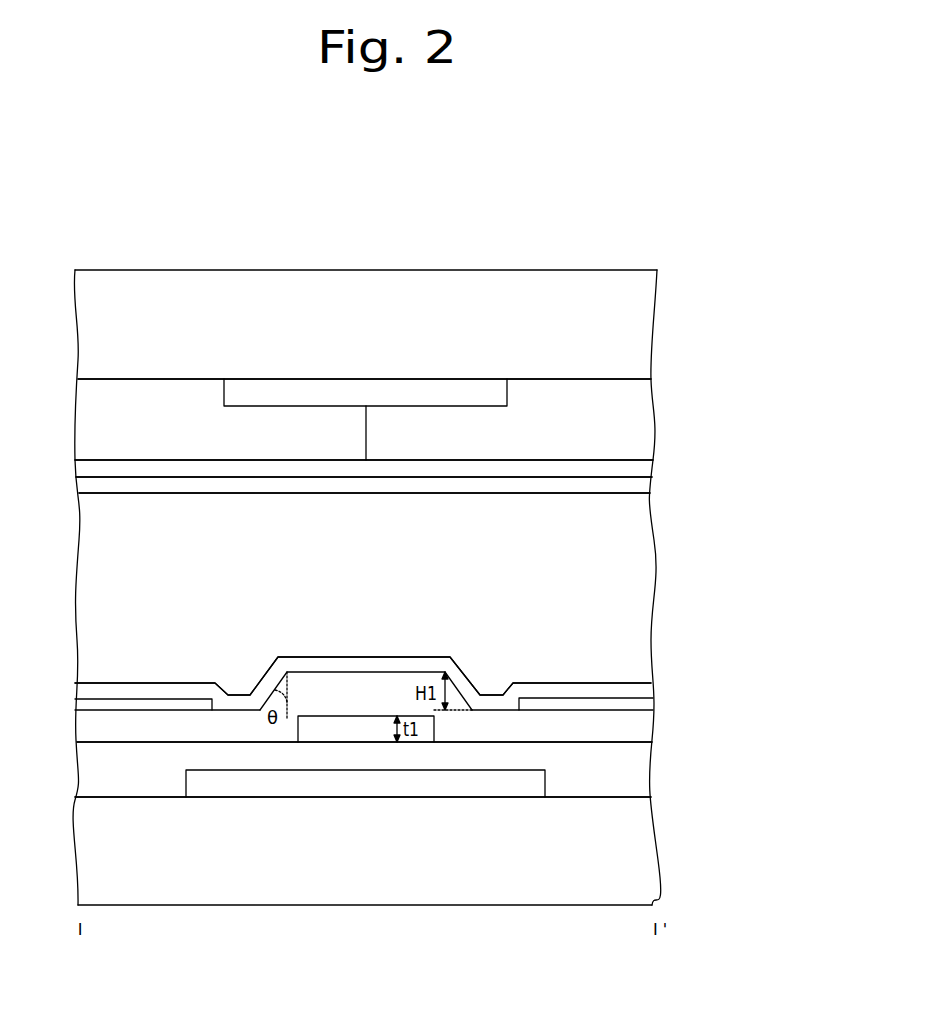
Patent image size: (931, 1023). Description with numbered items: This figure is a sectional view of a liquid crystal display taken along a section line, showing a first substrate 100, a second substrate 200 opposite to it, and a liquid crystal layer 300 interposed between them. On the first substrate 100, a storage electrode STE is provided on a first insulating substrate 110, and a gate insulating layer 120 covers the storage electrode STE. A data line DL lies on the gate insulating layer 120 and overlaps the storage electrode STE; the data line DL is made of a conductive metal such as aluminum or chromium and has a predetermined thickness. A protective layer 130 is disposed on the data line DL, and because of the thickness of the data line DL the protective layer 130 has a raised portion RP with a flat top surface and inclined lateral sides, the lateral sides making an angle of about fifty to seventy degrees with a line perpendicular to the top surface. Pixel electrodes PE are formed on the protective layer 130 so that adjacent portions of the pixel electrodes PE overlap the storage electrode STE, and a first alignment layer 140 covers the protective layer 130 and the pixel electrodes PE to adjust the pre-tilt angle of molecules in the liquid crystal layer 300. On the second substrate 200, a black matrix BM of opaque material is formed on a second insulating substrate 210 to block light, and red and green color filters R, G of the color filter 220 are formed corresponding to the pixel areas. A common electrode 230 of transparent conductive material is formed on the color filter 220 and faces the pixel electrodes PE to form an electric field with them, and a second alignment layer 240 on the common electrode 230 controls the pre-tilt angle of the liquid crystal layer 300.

The second insulating substrate 210 is at (642, 320).
The color filter 220 is at (642, 421).
The common electrode 230 is at (642, 468).
The second alignment layer 240 is at (642, 493).
The second substrate 200 is at (741, 308).
The liquid crystal layer 300 is at (642, 588).
The first alignment layer 140 is at (642, 691).
The pixel electrode PE is at (642, 713).
The raised portion RP is at (372, 660).
The protective layer 130 is at (642, 738).
The gate insulating layer 120 is at (642, 771).
The first insulating substrate 110 is at (642, 855).
The first substrate 100 is at (744, 682).
The black matrix BM is at (441, 393).
The data line DL is at (347, 735).
The storage electrode STE is at (252, 783).
The red color filter R is at (157, 420).
The green color filter G is at (562, 420).